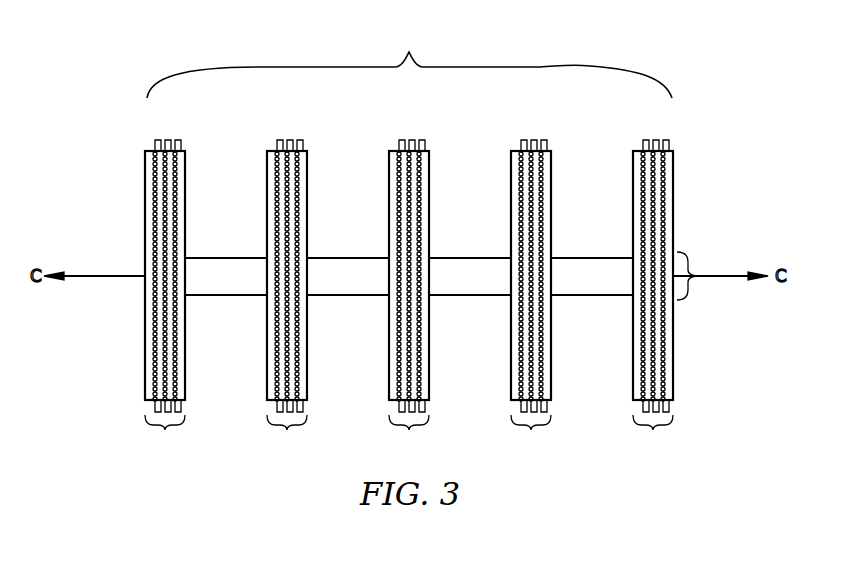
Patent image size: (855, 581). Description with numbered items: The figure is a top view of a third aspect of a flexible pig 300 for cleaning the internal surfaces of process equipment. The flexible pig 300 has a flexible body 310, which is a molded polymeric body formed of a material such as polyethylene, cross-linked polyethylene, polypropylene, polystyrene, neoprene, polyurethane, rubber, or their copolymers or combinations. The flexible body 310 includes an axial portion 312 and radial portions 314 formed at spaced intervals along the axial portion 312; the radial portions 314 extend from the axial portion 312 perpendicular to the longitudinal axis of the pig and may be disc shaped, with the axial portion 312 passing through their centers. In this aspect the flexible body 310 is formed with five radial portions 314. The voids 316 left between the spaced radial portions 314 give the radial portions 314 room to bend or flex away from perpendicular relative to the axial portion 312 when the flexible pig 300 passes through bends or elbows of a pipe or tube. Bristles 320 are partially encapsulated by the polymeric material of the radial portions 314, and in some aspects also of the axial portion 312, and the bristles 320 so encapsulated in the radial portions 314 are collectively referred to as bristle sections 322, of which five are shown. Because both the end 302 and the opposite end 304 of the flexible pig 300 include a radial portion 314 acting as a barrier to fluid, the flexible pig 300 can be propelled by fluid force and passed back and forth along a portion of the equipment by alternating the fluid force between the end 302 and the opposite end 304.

The flexible pig 300 is at (156, 29).
The end 302 is at (145, 352).
The opposite end 304 is at (676, 355).
The flexible body 310 is at (409, 64).
The axial portion 312 is at (700, 264).
The radial portions 314 is at (145, 152).
The voids 316 is at (238, 152).
The bristles 320 is at (160, 140).
The bristle sections 322 is at (409, 298).